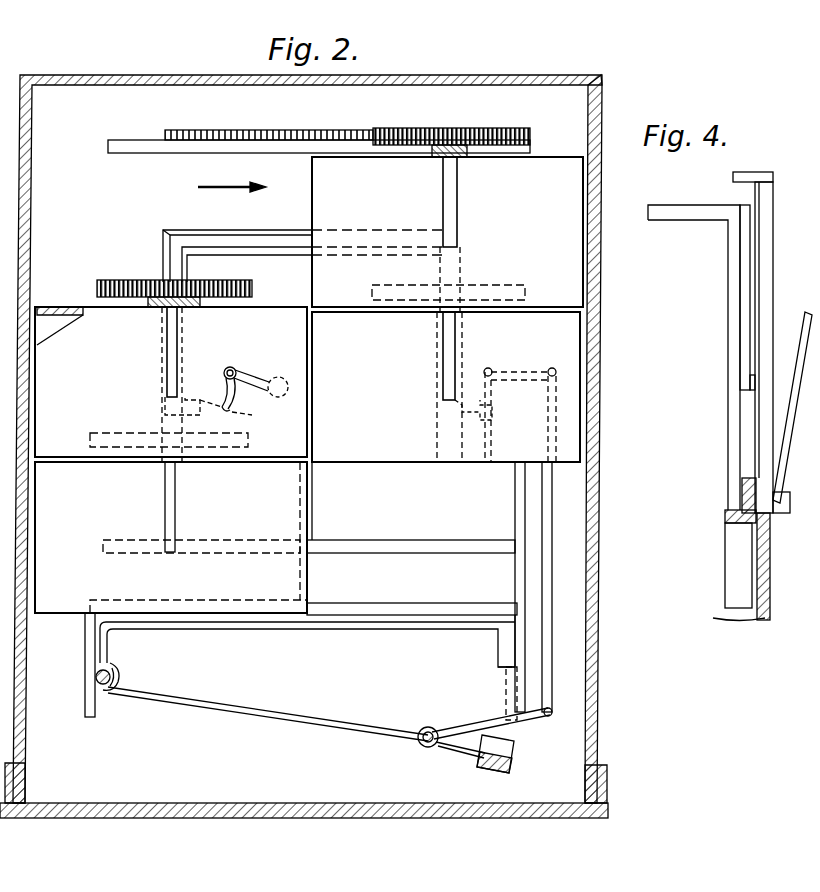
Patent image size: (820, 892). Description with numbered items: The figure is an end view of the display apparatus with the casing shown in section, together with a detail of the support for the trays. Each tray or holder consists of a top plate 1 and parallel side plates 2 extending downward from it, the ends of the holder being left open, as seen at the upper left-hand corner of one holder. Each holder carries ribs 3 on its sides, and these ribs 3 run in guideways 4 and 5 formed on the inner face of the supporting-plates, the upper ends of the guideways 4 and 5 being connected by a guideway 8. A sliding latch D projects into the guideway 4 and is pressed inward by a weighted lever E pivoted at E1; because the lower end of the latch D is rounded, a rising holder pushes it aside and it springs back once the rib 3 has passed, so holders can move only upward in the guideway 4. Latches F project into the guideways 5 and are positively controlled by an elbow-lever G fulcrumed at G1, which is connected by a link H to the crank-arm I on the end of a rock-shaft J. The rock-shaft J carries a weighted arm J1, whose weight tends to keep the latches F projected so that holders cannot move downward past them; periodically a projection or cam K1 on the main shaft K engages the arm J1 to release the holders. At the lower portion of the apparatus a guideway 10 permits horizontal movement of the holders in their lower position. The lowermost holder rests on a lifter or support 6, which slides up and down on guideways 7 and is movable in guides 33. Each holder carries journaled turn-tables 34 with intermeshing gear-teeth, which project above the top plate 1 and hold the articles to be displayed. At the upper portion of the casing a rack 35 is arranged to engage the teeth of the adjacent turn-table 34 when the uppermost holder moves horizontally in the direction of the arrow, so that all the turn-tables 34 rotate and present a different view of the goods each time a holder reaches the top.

In FIG. 2, the top plate 1 is at (60, 325).
In FIG. 4, the top plate 1 is at (684, 222).
In FIG. 2, the side plate 2 is at (171, 460).
In FIG. 4, the side plate 2 is at (738, 386).
In FIG. 2, the rib 3 is at (458, 190).
In FIG. 4, the rib 3 is at (753, 255).
In FIG. 2, the guideway 4 is at (163, 408).
In FIG. 2, the guideway 5 is at (435, 425).
In FIG. 2, the support 6 is at (360, 603).
In FIG. 4, the support 6 is at (725, 515).
In FIG. 2, the guideway 7 is at (96, 707).
In FIG. 2, the guideway 8 is at (303, 240).
In FIG. 2, the guideway 10 is at (360, 548).
In FIG. 2, the guides 33 is at (312, 492).
In FIG. 2, the turn-table 34 is at (465, 130).
In FIG. 4, the turn-table 34 is at (790, 432).
In FIG. 2, the rack 35 is at (288, 112).
In FIG. 2, the sliding latch D is at (232, 402).
In FIG. 2, the weighted lever E is at (284, 377).
In FIG. 2, the pivot E1 is at (234, 368).
In FIG. 2, the latch F is at (488, 418).
In FIG. 2, the elbow-lever G is at (551, 366).
In FIG. 2, the fulcrum G1 is at (490, 367).
In FIG. 2, the link H is at (560, 528).
In FIG. 2, the crank-arm I is at (512, 735).
In FIG. 2, the rock-shaft J is at (418, 730).
In FIG. 2, the weighted arm J1 is at (228, 712).
In FIG. 2, the main shaft K is at (95, 678).
In FIG. 2, the cam K1 is at (118, 672).